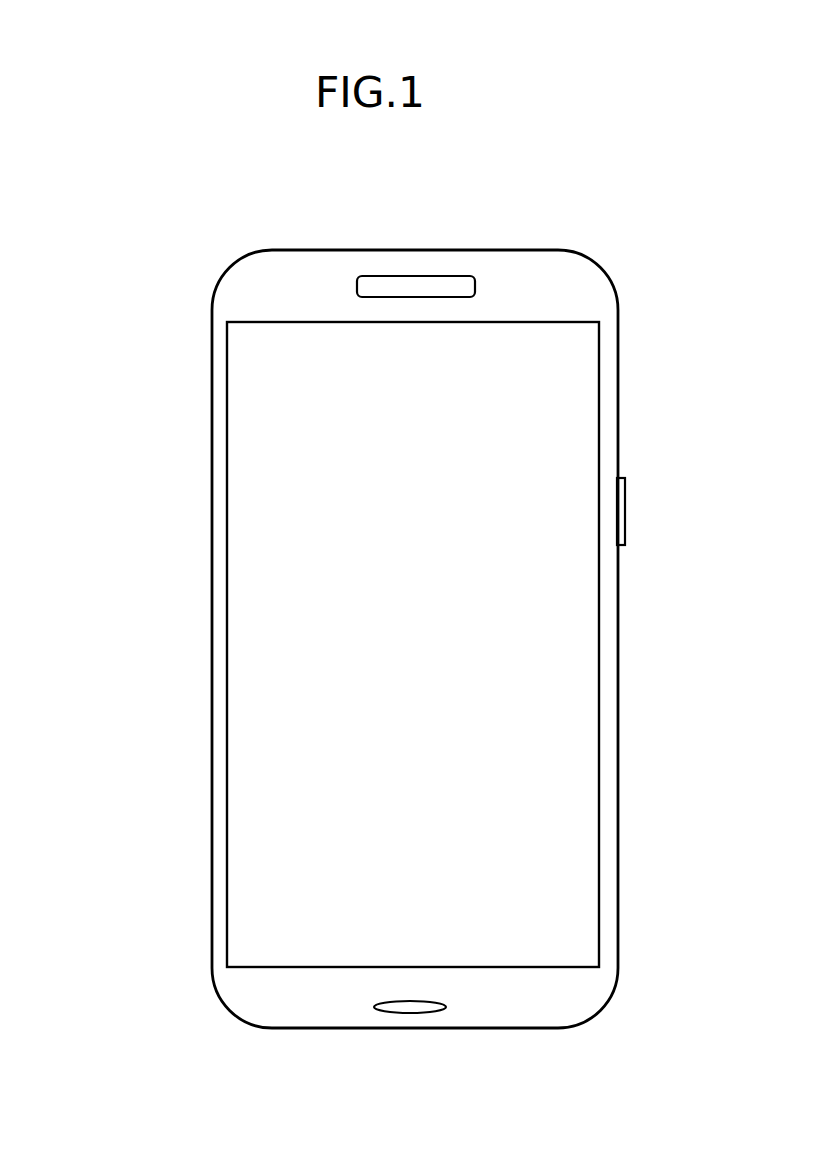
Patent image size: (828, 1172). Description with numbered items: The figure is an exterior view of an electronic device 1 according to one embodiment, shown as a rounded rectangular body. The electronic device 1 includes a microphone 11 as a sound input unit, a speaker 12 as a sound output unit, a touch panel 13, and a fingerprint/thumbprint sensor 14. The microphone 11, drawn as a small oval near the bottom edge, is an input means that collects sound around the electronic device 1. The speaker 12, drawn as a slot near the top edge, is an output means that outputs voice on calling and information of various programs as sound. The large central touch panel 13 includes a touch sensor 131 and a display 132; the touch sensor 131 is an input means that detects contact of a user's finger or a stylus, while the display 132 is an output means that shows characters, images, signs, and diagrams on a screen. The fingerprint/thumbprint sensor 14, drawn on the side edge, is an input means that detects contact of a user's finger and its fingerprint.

The electronic device 1 is at (599, 268).
The microphone 11 is at (410, 1013).
The speaker 12 is at (418, 275).
The touch panel 13 is at (223, 605).
The touch sensor 131 is at (90, 498).
The display 132 is at (90, 531).
The fingerprint/thumbprint sensor 14 is at (625, 511).